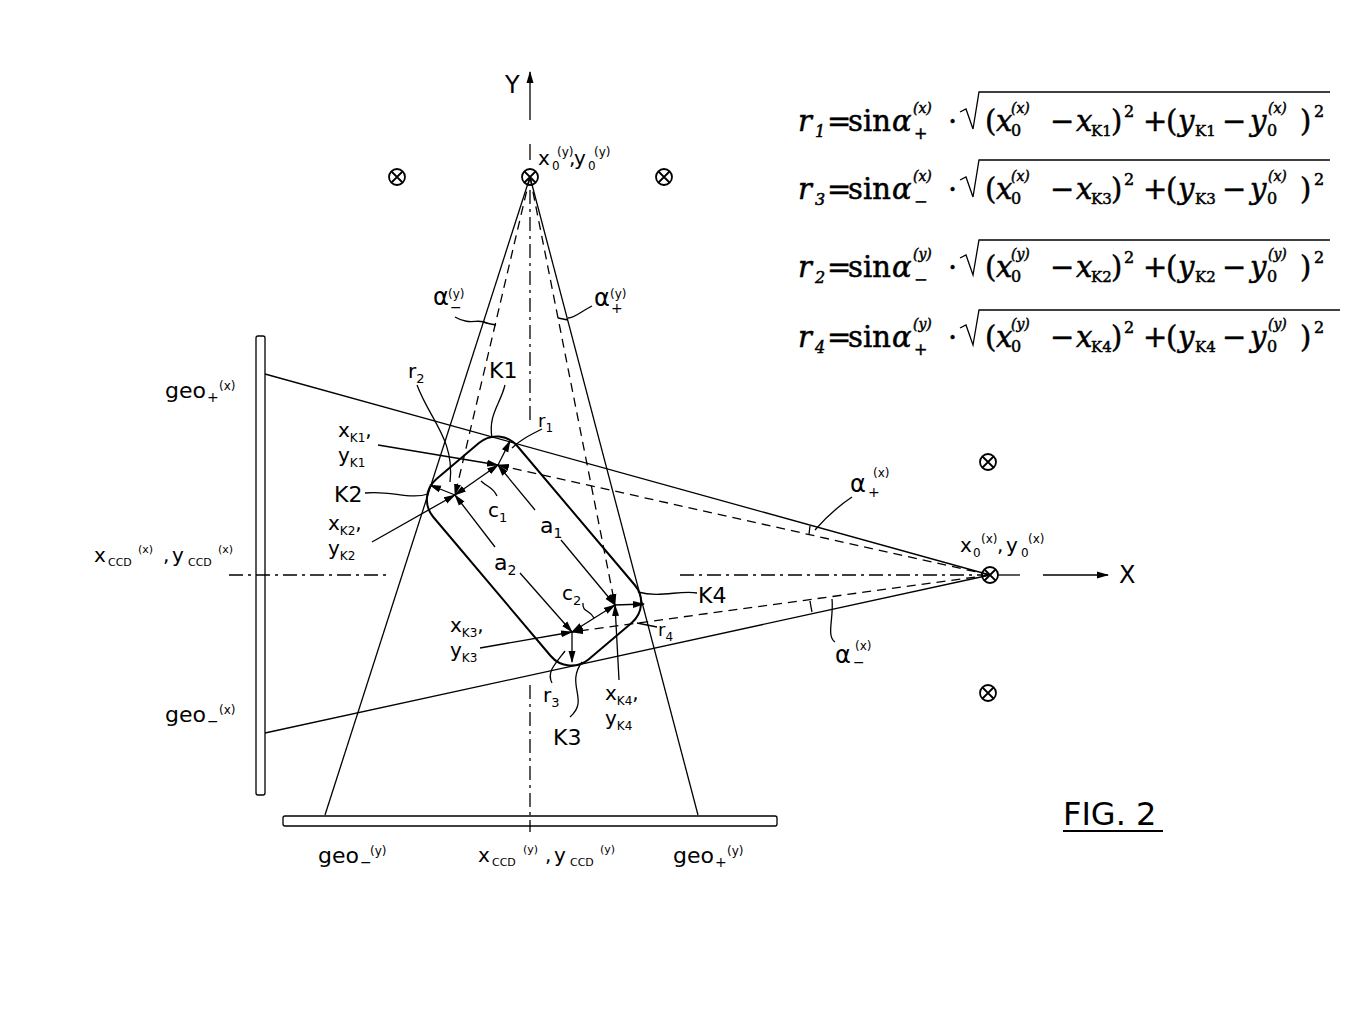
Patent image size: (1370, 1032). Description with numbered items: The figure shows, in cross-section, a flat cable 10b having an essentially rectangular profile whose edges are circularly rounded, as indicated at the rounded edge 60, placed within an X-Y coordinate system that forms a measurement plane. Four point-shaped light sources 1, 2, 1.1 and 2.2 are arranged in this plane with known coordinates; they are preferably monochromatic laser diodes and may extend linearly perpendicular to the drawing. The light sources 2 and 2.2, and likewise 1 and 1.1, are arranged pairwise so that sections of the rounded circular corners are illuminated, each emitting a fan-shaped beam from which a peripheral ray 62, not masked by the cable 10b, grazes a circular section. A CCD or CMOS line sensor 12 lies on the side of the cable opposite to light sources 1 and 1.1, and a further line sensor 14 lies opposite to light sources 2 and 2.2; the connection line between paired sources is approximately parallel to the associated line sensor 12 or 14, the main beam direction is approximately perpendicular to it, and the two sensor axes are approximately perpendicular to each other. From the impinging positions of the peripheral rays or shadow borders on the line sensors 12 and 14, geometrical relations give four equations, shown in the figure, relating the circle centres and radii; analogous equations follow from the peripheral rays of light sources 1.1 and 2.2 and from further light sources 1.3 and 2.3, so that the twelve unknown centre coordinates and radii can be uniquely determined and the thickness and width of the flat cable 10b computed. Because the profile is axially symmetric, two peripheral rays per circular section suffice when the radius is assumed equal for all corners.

The point-shaped light source 1 is at (994, 591).
The point-shaped light source 1.1 is at (1010, 682).
The light source 1.3 is at (1008, 472).
The point-shaped light source 2 is at (521, 165).
The point-shaped light source 2.2 is at (375, 165).
The light source 2.3 is at (684, 165).
The flat cable 10b is at (615, 547).
The CCD or CMOS line sensor 12 is at (745, 816).
The line sensor 14 is at (256, 450).
The circularly rounded edge 60 is at (534, 664).
The upper boundary ray geo+(x) 62 is at (659, 482).